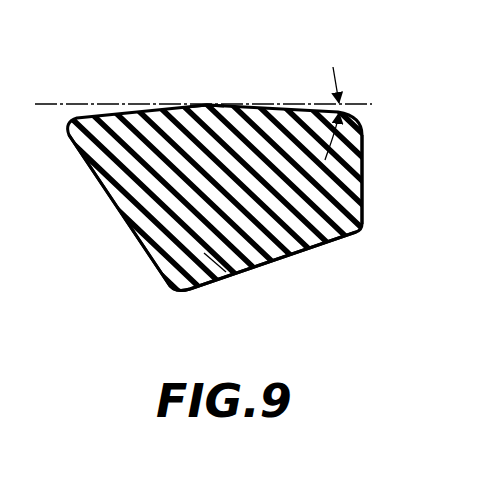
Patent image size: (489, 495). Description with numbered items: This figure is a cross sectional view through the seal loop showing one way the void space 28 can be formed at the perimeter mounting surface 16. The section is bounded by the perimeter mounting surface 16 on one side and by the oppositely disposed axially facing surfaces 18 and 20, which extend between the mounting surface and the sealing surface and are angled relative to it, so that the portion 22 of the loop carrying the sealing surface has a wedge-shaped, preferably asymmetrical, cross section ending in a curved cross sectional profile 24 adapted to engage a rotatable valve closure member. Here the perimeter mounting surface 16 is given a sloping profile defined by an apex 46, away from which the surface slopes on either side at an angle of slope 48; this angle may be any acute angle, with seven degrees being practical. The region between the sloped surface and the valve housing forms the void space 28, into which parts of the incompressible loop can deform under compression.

The perimeter mounting surface 16 is at (108, 117).
The axially facing surface 18 is at (114, 206).
The axially facing surface 20 is at (362, 172).
The wedge-shaped portion 22 is at (228, 274).
The curved cross sectional profile 24 is at (172, 292).
The void space 28 is at (263, 95).
The apex 46 is at (204, 107).
The angle of slope 48 is at (350, 113).